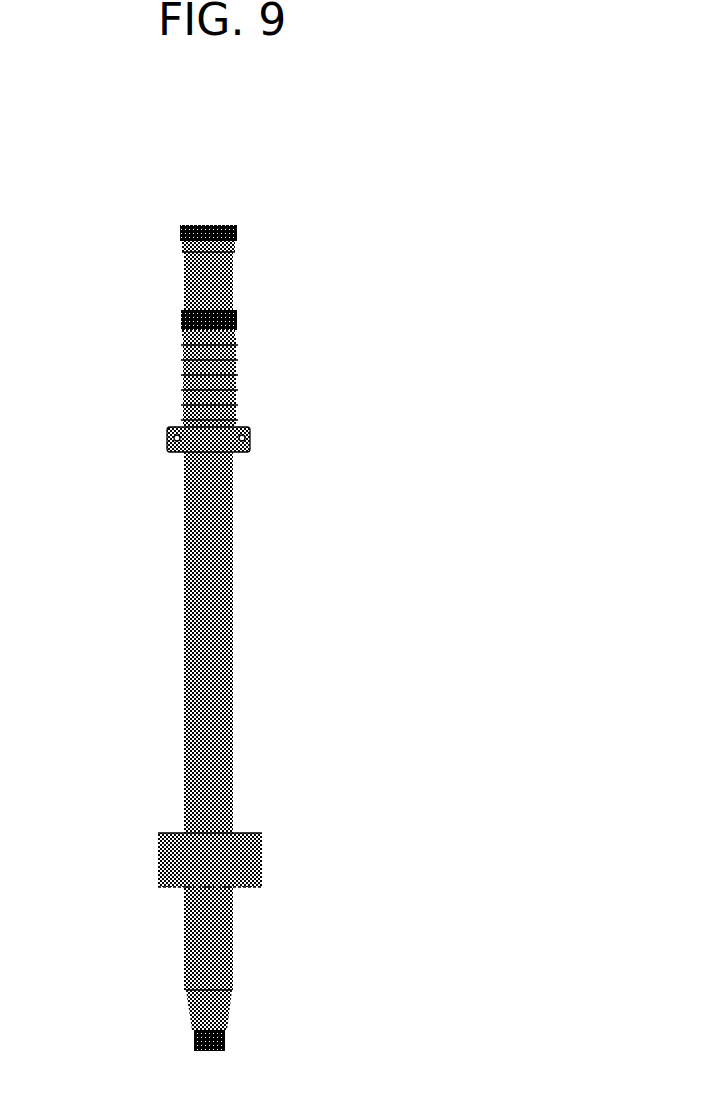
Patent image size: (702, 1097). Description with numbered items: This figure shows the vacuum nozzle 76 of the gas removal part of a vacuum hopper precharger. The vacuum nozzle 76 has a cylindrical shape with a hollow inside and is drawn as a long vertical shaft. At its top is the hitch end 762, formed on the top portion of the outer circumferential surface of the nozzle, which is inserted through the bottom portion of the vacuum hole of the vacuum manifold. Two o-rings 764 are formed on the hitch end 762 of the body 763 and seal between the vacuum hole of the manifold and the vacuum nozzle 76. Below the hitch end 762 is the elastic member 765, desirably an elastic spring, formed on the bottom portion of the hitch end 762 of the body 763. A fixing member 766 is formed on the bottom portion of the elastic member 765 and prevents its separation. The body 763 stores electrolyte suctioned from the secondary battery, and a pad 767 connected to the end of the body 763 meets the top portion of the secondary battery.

The vacuum nozzle 76 is at (65, 157).
The hitch end 762 is at (206, 275).
The body 763 is at (233, 578).
The o-ring 764 is at (237, 232).
The elastic member 765 is at (235, 383).
The fixing member 766 is at (250, 441).
The pad 767 is at (225, 1036).